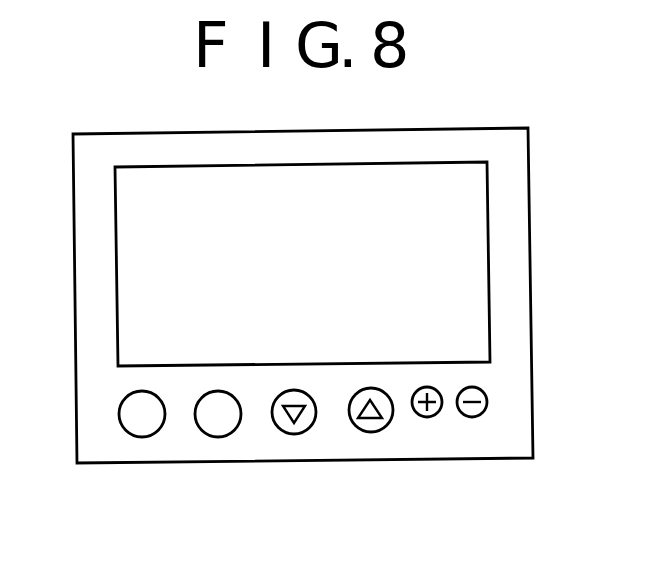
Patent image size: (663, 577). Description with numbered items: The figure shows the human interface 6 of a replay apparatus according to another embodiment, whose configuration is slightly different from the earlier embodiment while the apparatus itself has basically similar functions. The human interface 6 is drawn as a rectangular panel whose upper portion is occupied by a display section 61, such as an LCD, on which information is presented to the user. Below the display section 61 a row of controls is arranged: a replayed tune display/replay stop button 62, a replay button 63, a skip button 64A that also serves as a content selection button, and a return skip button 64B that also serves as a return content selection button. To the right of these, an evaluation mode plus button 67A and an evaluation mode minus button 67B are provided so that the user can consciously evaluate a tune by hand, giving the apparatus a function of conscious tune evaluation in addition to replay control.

The human interface 6 is at (529, 158).
The display section 61 is at (488, 229).
The replayed tune display/replay stop button 62 is at (138, 437).
The replay button 63 is at (216, 437).
The skip button 64A is at (292, 434).
The return skip button 64B is at (366, 432).
The evaluation mode plus button 67A is at (425, 417).
The evaluation mode minus button 67B is at (473, 417).